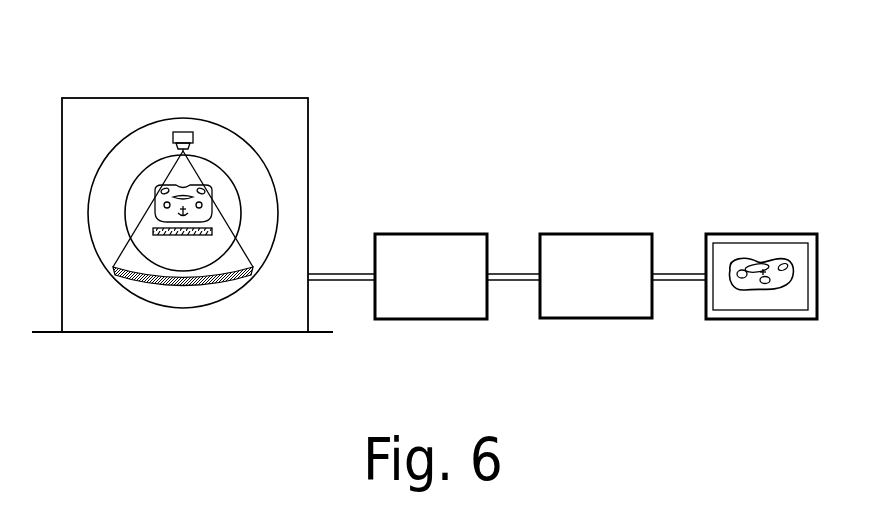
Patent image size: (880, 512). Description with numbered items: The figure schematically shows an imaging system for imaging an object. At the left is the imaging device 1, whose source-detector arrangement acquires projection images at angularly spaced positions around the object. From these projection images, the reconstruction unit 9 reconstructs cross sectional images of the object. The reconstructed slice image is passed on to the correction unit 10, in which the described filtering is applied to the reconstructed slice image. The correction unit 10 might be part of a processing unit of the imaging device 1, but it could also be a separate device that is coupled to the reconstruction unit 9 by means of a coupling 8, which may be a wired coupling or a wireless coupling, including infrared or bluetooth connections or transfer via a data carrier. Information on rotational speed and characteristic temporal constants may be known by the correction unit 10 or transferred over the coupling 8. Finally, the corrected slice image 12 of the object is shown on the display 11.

The imaging device 1 is at (247, 98).
The coupling 8 is at (515, 272).
The reconstruction unit 9 is at (436, 233).
The correction unit 10 is at (600, 232).
The display 11 is at (765, 232).
The corrected slice image 12 is at (778, 290).